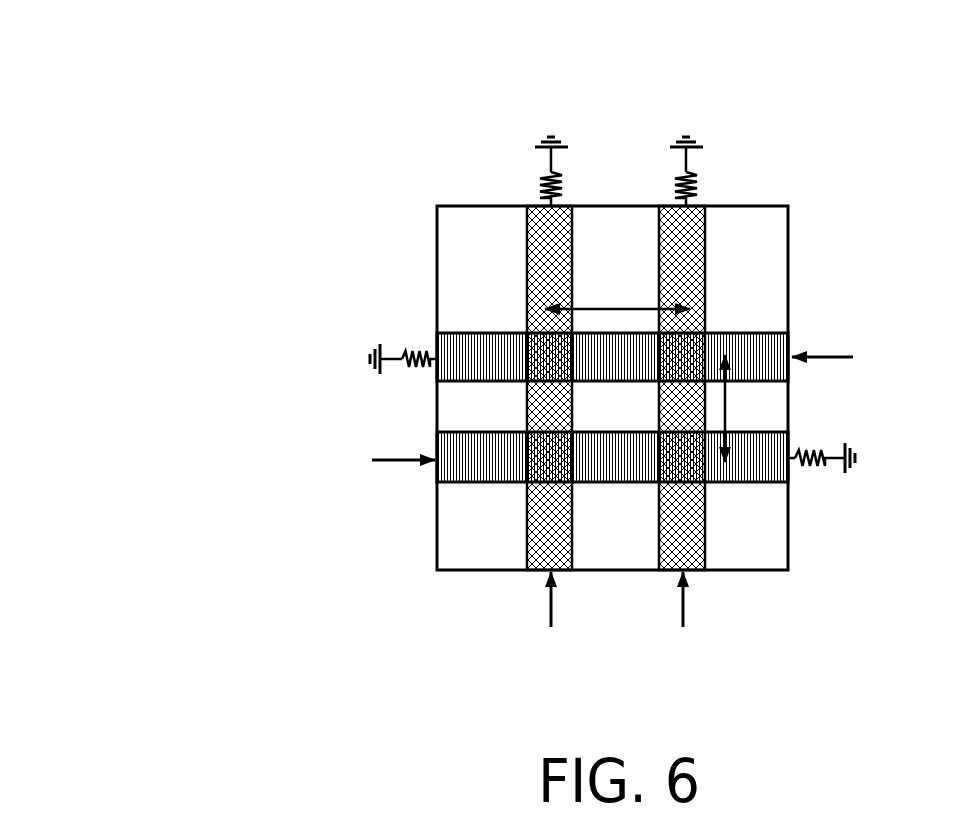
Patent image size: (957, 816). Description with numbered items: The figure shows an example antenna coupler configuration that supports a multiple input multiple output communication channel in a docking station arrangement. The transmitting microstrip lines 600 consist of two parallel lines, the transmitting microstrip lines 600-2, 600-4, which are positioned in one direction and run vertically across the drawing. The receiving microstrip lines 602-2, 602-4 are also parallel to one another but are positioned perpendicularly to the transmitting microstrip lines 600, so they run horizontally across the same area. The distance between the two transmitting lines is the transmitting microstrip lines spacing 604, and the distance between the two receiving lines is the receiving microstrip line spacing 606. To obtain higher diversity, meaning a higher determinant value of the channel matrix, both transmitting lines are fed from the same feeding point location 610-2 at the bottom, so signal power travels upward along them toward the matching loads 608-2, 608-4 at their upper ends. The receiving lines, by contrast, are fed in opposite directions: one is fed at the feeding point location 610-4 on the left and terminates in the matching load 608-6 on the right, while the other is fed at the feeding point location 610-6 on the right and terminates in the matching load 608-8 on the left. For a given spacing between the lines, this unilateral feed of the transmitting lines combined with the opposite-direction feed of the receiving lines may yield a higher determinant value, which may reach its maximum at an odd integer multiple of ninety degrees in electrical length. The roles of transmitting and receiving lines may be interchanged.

The transmitting microstrip lines 600 is at (176, 72).
The transmitting microstrip line 600-2 is at (545, 169).
The transmitting microstrip line 600-4 is at (699, 167).
The receiving microstrip line 602-2 is at (766, 347).
The receiving microstrip line 602-4 is at (758, 490).
The transmitting microstrip lines spacing 604 is at (620, 272).
The receiving microstrip line spacing 606 is at (760, 410).
The matching load 608-2 is at (552, 132).
The matching load 608-4 is at (688, 132).
The matching load 608-6 is at (816, 434).
The matching load 608-8 is at (412, 344).
The feeding point location 610-2 is at (634, 650).
The feeding point location 610-4 is at (375, 460).
The feeding point location 610-6 is at (849, 360).